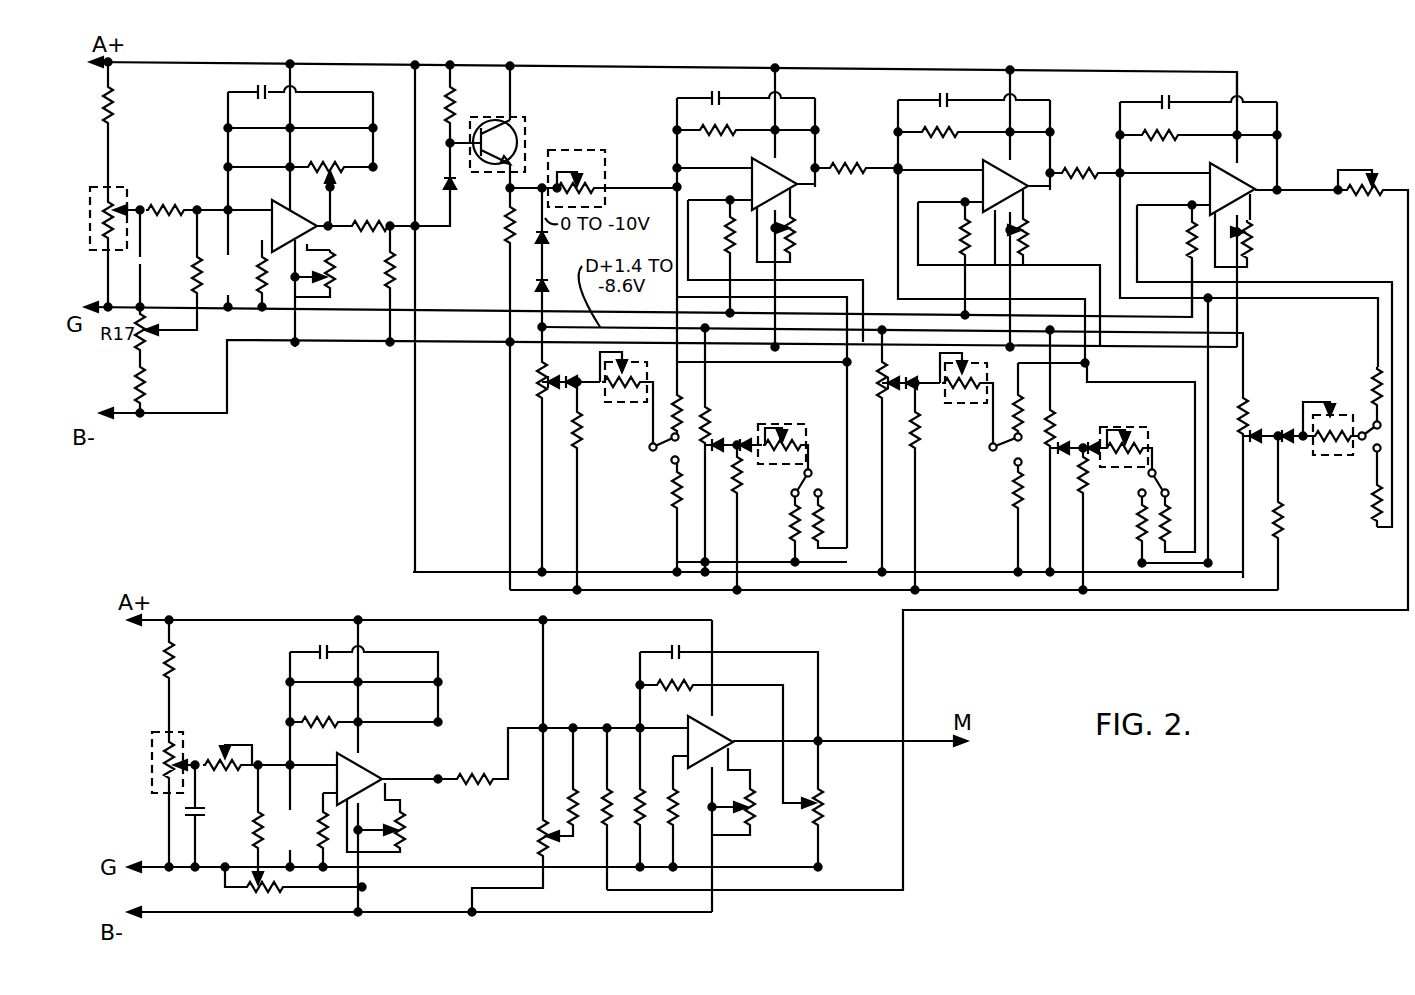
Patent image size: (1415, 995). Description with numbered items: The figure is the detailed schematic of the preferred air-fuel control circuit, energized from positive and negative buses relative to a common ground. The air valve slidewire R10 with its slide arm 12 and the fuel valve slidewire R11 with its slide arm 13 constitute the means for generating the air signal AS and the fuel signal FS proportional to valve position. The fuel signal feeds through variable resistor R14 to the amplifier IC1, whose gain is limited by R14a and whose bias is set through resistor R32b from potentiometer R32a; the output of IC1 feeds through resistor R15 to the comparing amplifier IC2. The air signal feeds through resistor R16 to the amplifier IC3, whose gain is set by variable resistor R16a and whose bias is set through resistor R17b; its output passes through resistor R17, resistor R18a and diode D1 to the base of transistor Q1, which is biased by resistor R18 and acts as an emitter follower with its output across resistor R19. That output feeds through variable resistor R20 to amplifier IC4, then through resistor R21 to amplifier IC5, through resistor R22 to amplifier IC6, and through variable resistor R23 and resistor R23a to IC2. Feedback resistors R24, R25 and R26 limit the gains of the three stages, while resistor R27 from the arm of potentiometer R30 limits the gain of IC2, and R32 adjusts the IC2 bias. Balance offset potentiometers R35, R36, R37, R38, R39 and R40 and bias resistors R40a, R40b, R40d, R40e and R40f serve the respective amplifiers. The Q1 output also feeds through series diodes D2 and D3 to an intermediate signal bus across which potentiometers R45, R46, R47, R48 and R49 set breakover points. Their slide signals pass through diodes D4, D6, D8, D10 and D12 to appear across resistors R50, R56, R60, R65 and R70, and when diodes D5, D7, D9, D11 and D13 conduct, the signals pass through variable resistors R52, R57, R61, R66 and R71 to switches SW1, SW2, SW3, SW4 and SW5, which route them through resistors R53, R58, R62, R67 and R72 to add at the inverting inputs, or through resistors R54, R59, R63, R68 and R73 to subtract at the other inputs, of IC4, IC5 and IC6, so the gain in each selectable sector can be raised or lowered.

The slide arm 12 is at (122, 208).
The slide arm 13 is at (178, 760).
The air signal means AS is at (118, 190).
The fuel signal means FS is at (160, 735).
The slidewire R10 is at (104, 245).
The slidewire R11 is at (162, 775).
The variable resistor R14 is at (223, 778).
The resistor R14a is at (305, 722).
The resistor R15 is at (475, 768).
The resistor R16 is at (167, 223).
The variable resistor R16a is at (329, 155).
The resistor R17 is at (262, 276).
The resistor R17b is at (175, 275).
The resistor R18 is at (452, 112).
The resistor R18a is at (395, 275).
The resistor R19 is at (508, 212).
The variable resistor R20 is at (576, 177).
The resistor R21 is at (851, 157).
The resistor R22 is at (1080, 162).
The variable resistor R23 is at (1362, 203).
The resistor R23a is at (605, 797).
The resistor R24 is at (714, 120).
The resistor R25 is at (937, 122).
The resistor R26 is at (1160, 124).
The resistor R27 is at (665, 743).
The potentiometer R30 is at (841, 807).
The bias adjustment R32 is at (521, 837).
The potentiometer R32a is at (255, 895).
The resistor R32b is at (256, 835).
The potentiometer R35 is at (421, 830).
The potentiometer R36 is at (752, 815).
The potentiometer R37 is at (350, 270).
The potentiometer R38 is at (812, 235).
The potentiometer R39 is at (1043, 237).
The potentiometer R40 is at (1268, 240).
The resistor R40a is at (262, 285).
The resistor R40b is at (676, 830).
The resistor R40d is at (730, 235).
The resistor R40e is at (965, 232).
The resistor R40f is at (1192, 236).
The potentiometer R45 is at (540, 385).
The potentiometer R46 is at (706, 425).
The potentiometer R47 is at (896, 392).
The potentiometer R48 is at (1052, 430).
The potentiometer R49 is at (1247, 400).
The resistor R50 is at (580, 450).
The variable resistor R52 is at (624, 393).
The resistor R53 is at (680, 395).
The resistor R54 is at (675, 505).
The resistor R56 is at (737, 505).
The variable resistor R57 is at (795, 428).
The resistor R58 is at (818, 545).
The resistor R59 is at (774, 526).
The resistor R60 is at (918, 455).
The variable resistor R61 is at (975, 372).
The resistor R62 is at (1022, 400).
The resistor R63 is at (1016, 505).
The resistor R65 is at (1082, 500).
The variable resistor R66 is at (1142, 428).
The resistor R67 is at (1167, 540).
The resistor R68 is at (1140, 540).
The resistor R70 is at (1280, 530).
The variable resistor R71 is at (1310, 448).
The resistor R72 is at (1356, 387).
The resistor R73 is at (1375, 505).
The amplifier IC1 is at (357, 777).
The amplifier IC2 is at (711, 739).
The amplifier IC3 is at (287, 219).
The amplifier IC4 is at (773, 180).
The amplifier IC5 is at (1004, 182).
The amplifier IC6 is at (1231, 185).
The transistor Q1 is at (510, 135).
The diode D1 is at (462, 197).
The series polarity diode D2 is at (556, 243).
The series polarity diode D3 is at (556, 286).
The diode D4 is at (552, 376).
The reverse polarity diode D5 is at (580, 390).
The diode D6 is at (724, 457).
The diode D7 is at (748, 455).
The diode D8 is at (903, 370).
The diode D9 is at (918, 392).
The diode D10 is at (1070, 462).
The diode D11 is at (1092, 458).
The diode D12 is at (1258, 428).
The diode D13 is at (1290, 445).
The switch SW1 is at (655, 454).
The switch SW2 is at (783, 488).
The switch SW3 is at (995, 454).
The switch SW4 is at (1165, 461).
The switch SW5 is at (1348, 454).